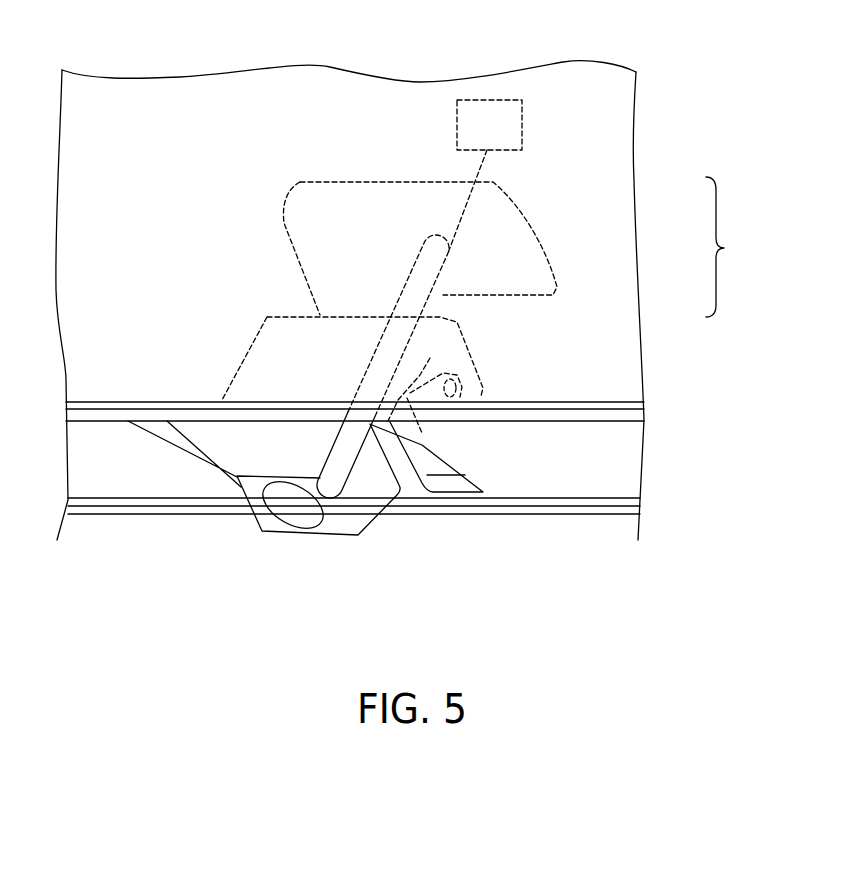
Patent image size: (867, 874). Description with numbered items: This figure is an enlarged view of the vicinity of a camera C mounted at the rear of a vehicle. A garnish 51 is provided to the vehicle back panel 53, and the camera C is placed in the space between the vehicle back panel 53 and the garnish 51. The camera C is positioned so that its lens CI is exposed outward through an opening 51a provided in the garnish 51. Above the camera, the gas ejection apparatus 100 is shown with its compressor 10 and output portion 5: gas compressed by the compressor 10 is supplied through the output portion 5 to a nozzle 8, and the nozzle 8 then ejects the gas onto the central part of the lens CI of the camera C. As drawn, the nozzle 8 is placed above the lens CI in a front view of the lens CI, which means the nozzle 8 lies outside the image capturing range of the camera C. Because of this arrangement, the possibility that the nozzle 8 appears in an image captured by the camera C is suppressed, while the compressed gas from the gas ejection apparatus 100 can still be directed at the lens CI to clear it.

The vehicle back panel 53 is at (131, 100).
The garnish 51 is at (628, 462).
The opening 51a is at (173, 440).
The camera C is at (257, 523).
The lens CI is at (313, 517).
The nozzle 8 is at (343, 457).
The output portion 5 is at (453, 273).
The compressor 10 is at (522, 122).
The gas ejection apparatus 100 is at (738, 247).